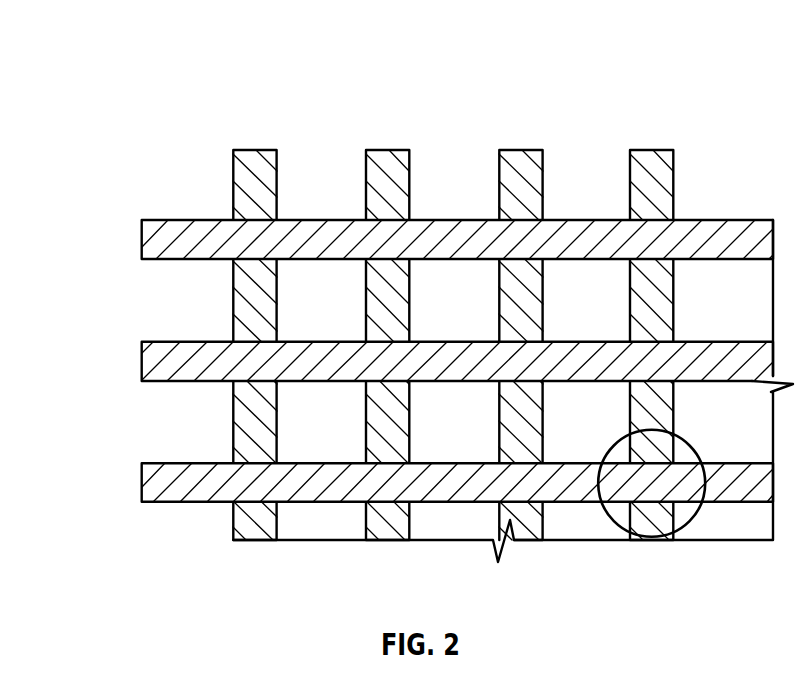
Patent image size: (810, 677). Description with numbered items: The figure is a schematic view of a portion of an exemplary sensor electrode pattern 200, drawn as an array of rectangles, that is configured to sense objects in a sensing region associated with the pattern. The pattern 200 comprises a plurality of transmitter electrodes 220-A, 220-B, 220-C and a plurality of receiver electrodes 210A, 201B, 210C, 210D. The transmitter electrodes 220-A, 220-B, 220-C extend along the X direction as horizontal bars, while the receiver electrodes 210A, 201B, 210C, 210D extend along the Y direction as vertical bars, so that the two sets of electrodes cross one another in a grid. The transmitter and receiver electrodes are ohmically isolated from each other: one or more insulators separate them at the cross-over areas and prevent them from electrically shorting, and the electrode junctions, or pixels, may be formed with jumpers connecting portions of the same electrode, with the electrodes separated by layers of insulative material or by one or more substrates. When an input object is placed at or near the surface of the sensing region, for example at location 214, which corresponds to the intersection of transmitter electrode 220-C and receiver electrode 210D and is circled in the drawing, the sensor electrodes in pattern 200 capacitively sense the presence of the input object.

The sensor electrode pattern 200 is at (105, 47).
The receiver electrode 210A is at (255, 149).
The receiver electrode 201B is at (389, 149).
The receiver electrode 210C is at (522, 149).
The receiver electrode 210D is at (652, 149).
The transmitter electrode 220-A is at (142, 240).
The transmitter electrode 220-B is at (142, 362).
The transmitter electrode 220-C is at (142, 483).
The location 214 is at (687, 438).